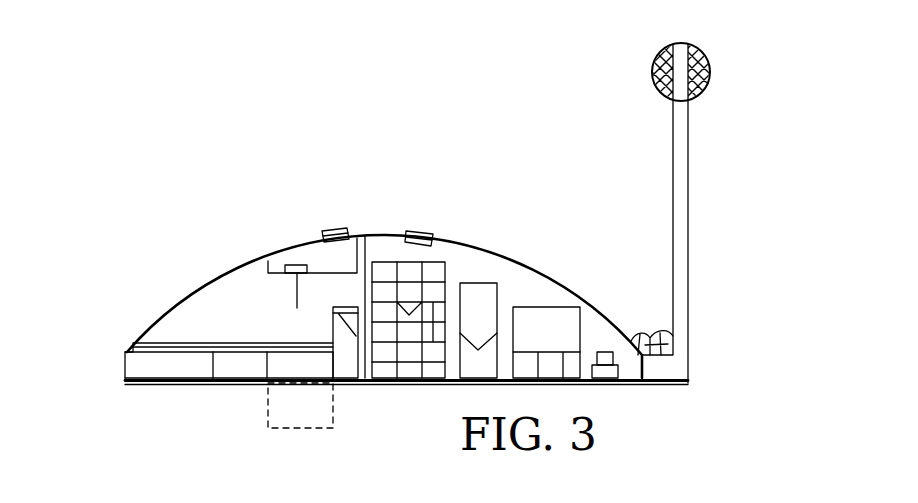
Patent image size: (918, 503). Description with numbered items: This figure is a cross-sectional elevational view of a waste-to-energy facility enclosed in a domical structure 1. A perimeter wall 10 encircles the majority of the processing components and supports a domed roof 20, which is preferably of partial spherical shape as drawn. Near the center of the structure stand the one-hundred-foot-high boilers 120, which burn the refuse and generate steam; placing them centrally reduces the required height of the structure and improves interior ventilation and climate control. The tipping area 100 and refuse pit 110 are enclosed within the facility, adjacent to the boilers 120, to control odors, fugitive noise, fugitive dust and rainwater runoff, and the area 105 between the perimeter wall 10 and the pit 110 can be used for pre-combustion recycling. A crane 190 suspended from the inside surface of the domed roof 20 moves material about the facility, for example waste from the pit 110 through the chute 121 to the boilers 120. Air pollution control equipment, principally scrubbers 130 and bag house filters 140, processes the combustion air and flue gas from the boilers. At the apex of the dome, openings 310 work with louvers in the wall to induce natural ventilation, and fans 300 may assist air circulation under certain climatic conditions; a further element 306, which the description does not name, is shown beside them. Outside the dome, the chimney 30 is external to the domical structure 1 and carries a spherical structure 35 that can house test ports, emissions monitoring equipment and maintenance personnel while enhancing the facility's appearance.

The domical structure 1 is at (197, 252).
The perimeter wall 10 is at (125, 363).
The domed roof 20 is at (556, 280).
The chimney 30 is at (688, 248).
The spherical structure 35 is at (702, 53).
The tipping area 100 is at (250, 370).
The pre-combustion recycling area 105 is at (167, 373).
The refuse pit 110 is at (310, 413).
The boilers 120 is at (420, 280).
The chute 121 is at (358, 314).
The scrubbers 130 is at (482, 293).
The bag house filters 140 is at (555, 322).
The crane 190 is at (293, 267).
The fans 300 is at (325, 237).
The sensor 306 is at (413, 235).
The openings 310 is at (343, 232).